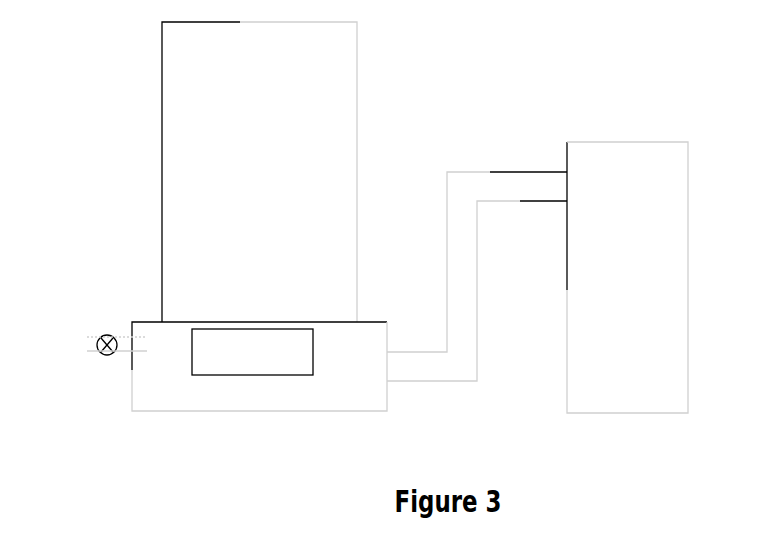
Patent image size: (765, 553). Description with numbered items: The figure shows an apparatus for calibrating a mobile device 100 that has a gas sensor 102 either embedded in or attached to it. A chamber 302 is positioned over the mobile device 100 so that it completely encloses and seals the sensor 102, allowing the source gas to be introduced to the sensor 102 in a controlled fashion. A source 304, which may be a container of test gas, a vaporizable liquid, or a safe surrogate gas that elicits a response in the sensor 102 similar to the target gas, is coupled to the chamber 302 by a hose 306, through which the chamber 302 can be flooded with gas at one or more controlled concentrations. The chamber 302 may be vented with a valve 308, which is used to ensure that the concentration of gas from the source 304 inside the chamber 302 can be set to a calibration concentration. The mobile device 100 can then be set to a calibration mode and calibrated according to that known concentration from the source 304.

The mobile device 100 is at (254, 77).
The sensor 102 is at (266, 362).
The chamber 302 is at (282, 401).
The source 304 is at (636, 221).
The hose 306 is at (490, 172).
The valve 308 is at (97, 332).